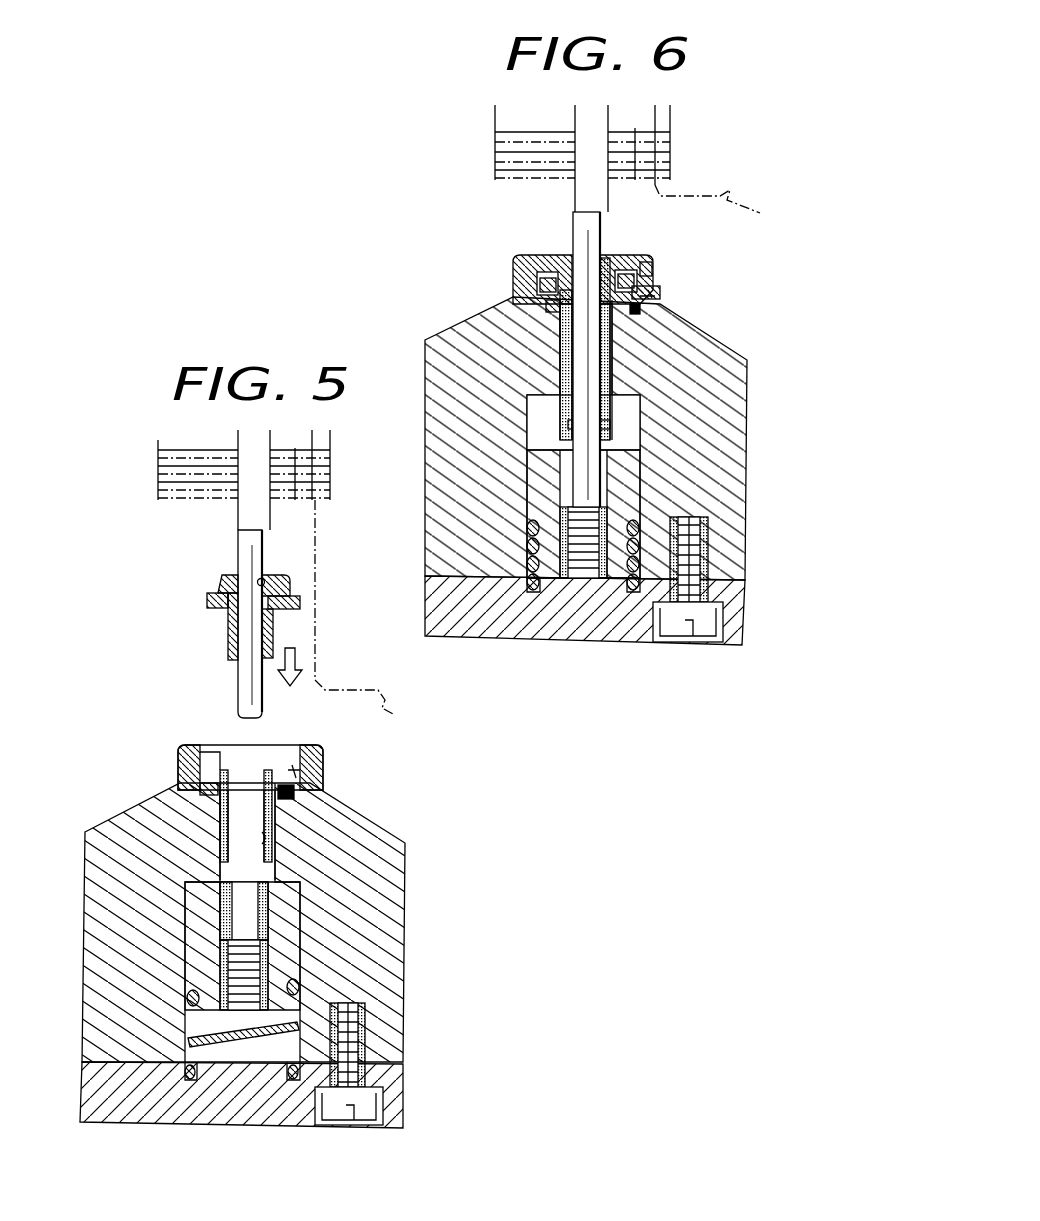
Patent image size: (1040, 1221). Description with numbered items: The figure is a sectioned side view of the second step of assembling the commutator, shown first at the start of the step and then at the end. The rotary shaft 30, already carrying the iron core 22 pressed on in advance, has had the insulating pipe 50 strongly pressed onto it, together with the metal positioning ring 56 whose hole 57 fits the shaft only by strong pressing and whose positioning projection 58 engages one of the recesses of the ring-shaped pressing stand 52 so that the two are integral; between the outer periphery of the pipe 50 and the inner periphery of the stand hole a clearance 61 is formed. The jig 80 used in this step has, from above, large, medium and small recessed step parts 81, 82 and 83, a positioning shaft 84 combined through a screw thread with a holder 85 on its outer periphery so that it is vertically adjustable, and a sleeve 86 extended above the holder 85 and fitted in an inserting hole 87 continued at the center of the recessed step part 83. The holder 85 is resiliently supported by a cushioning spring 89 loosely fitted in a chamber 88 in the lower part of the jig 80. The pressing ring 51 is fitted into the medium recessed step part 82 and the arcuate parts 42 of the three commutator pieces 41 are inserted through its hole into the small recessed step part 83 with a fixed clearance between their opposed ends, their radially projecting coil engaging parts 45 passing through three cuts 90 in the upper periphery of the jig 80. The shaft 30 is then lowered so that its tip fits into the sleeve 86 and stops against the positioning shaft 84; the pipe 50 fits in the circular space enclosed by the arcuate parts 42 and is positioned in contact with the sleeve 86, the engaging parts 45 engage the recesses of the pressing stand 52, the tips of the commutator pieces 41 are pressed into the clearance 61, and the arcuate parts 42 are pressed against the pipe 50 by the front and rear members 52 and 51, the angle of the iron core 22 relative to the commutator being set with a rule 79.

In FIG. 6, the iron core 22 is at (486, 137).
In FIG. 5, the iron core 22 is at (158, 450).
In FIG. 6, the rotary shaft 30 is at (603, 235).
In FIG. 5, the rotary shaft 30 is at (245, 545).
In FIG. 6, the commutator pieces 41 is at (645, 335).
In FIG. 5, the commutator pieces 41 is at (290, 813).
In FIG. 6, the arcuate piece 42 is at (614, 378).
In FIG. 5, the arcuate piece 42 is at (273, 852).
In FIG. 6, the coil engaging part 45 is at (655, 296).
In FIG. 5, the coil engaging part 45 is at (298, 775).
In FIG. 5, the insulating pipe 50 is at (228, 640).
In FIG. 6, the pressing ring 51 is at (546, 303).
In FIG. 5, the pressing ring 51 is at (202, 788).
In FIG. 6, the pressing stand 52 is at (655, 282).
In FIG. 5, the pressing stand 52 is at (205, 605).
In FIG. 6, the positioning ring 56 is at (618, 285).
In FIG. 5, the positioning ring 56 is at (232, 575).
In FIG. 5, the hole 57 is at (264, 580).
In FIG. 6, the positioning projection 58 is at (540, 277).
In FIG. 5, the positioning projection 58 is at (207, 595).
In FIG. 5, the clearance 61 is at (226, 610).
In FIG. 6, the rule 79 is at (729, 208).
In FIG. 5, the rule 79 is at (373, 617).
In FIG. 6, the jig 80 is at (423, 428).
In FIG. 5, the jig 80 is at (76, 980).
In FIG. 6, the recessed step part of large diameter 81 is at (543, 256).
In FIG. 5, the recessed step part of large diameter 81 is at (193, 770).
In FIG. 6, the recessed step part of medium diameter 82 is at (642, 309).
In FIG. 5, the recessed step part of medium diameter 82 is at (295, 792).
In FIG. 6, the recessed step part of small diameter 83 is at (558, 340).
In FIG. 5, the recessed step part of small diameter 83 is at (220, 832).
In FIG. 6, the positioning shaft 84 is at (567, 580).
In FIG. 5, the positioning shaft 84 is at (255, 913).
In FIG. 6, the holder 85 is at (633, 487).
In FIG. 5, the holder 85 is at (300, 940).
In FIG. 6, the sleeve 86 is at (602, 428).
In FIG. 5, the sleeve 86 is at (265, 836).
In FIG. 6, the inserting hole 87 is at (640, 397).
In FIG. 5, the inserting hole 87 is at (268, 905).
In FIG. 6, the chamber 88 is at (530, 412).
In FIG. 5, the chamber 88 is at (223, 1057).
In FIG. 6, the cushioning spring 89 is at (528, 588).
In FIG. 5, the cushioning spring 89 is at (287, 1030).
In FIG. 6, the cuts 90 is at (652, 268).
In FIG. 5, the cuts 90 is at (220, 747).